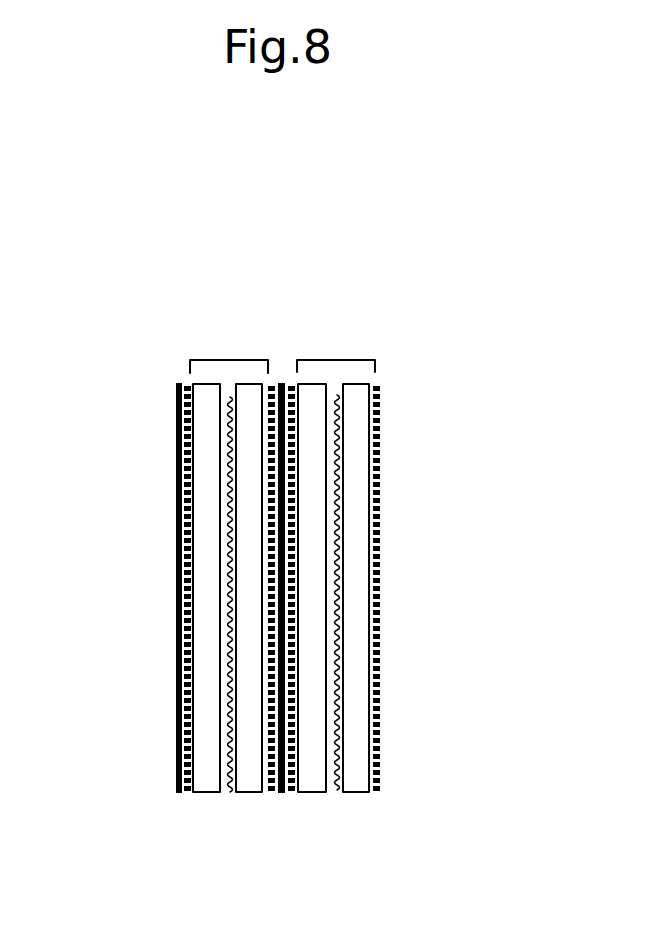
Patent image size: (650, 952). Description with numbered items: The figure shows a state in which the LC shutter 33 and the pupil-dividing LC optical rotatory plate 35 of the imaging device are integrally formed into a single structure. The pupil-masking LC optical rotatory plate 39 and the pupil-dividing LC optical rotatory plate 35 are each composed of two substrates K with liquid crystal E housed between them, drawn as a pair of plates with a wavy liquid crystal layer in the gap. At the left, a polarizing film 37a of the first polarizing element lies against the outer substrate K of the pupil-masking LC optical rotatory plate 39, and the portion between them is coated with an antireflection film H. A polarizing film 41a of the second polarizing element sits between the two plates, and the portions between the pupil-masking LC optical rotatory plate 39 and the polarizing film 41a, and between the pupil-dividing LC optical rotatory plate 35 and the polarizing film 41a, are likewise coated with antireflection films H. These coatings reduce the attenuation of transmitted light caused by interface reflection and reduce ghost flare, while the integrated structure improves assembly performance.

The LC shutter 33 is at (268, 332).
The pupil-masking LC optical rotatory plate 39 is at (232, 360).
The pupil-dividing LC optical rotatory plate 35 is at (335, 358).
The polarizing film 37a is at (179, 793).
The polarizing film 41a is at (283, 783).
The antireflection film H is at (187, 793).
The substrate K is at (215, 782).
The liquid crystal E is at (232, 788).